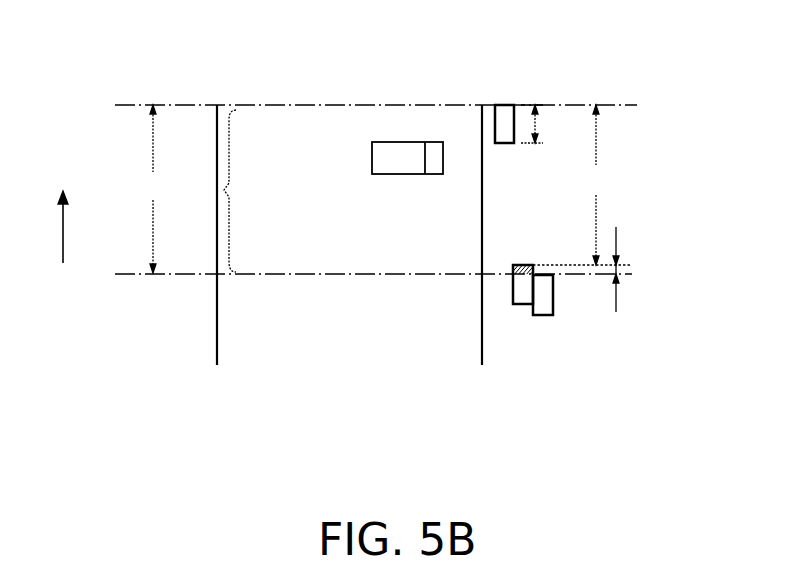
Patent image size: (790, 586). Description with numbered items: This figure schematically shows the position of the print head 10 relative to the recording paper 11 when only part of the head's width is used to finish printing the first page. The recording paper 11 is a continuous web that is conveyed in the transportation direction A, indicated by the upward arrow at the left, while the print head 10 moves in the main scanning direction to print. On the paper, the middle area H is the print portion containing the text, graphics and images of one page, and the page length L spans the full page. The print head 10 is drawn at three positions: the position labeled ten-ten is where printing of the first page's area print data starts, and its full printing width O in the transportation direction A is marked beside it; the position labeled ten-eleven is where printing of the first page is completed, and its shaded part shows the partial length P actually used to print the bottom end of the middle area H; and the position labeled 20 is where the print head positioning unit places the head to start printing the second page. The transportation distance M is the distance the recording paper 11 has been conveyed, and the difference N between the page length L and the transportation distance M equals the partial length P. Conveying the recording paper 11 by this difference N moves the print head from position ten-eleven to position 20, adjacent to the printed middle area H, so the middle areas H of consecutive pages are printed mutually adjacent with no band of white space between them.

The print head 10 is at (500, 105).
The recording paper 11 is at (467, 116).
The print head 20 is at (553, 297).
The page length L is at (152, 189).
The middle area H is at (224, 190).
The transportation distance M is at (596, 185).
The difference N is at (620, 272).
The printing width O is at (536, 126).
The partial length of the print head P is at (520, 264).
The transportation direction A is at (53, 227).